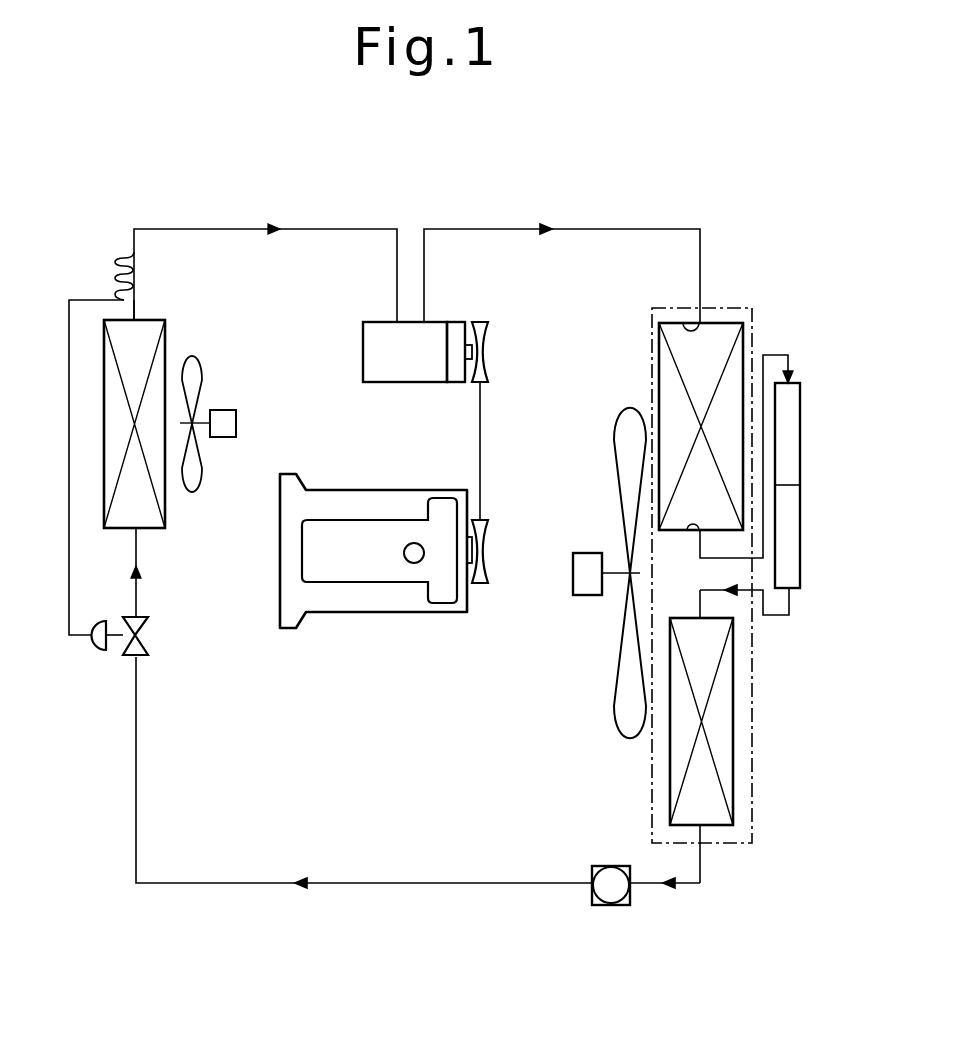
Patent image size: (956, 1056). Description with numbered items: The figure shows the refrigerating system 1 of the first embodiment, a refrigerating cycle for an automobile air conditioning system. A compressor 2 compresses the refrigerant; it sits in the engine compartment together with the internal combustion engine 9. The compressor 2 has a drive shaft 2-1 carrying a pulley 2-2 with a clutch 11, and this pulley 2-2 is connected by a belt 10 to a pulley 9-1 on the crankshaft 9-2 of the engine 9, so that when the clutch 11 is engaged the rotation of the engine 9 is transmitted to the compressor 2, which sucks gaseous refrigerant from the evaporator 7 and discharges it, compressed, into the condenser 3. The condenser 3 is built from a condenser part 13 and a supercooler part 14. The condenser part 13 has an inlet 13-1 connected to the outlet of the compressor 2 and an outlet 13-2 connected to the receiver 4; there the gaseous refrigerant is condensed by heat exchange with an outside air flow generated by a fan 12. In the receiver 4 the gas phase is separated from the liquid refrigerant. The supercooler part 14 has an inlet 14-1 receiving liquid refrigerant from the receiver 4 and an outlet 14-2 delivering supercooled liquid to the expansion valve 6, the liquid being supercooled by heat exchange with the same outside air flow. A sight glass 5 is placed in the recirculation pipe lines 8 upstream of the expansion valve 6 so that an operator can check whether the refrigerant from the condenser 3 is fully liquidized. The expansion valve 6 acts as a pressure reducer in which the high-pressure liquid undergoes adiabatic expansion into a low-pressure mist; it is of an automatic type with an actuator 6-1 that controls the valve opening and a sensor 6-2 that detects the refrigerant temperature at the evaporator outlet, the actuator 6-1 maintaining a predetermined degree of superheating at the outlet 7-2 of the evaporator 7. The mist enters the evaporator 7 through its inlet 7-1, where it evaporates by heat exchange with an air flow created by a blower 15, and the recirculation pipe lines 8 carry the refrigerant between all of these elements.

The refrigerating apparatus 1 is at (168, 190).
The compressor 2 is at (412, 384).
The drive shaft 2-1 is at (464, 378).
The pulley 2-2 is at (490, 360).
The condenser 3 is at (746, 306).
The receiver 4 is at (802, 446).
The sight glass 5 is at (592, 868).
The expansion valve 6 is at (149, 640).
The actuator 6-1 is at (96, 652).
The sensor 6-2 is at (118, 276).
The evaporator 7 is at (166, 348).
The inlet 7-1 is at (137, 530).
The outlet 7-2 is at (134, 320).
The recirculation pipe lines 8 is at (354, 228).
The internal combustion engine 9 is at (378, 610).
The pulley 9-1 is at (490, 547).
The engine output shaft 9-2 is at (472, 560).
The belt 10 is at (484, 440).
The clutch 11 is at (457, 330).
The fan 12 is at (587, 596).
The condenser part 13 is at (664, 356).
The inlet 13-1 is at (682, 325).
The outlet 13-2 is at (692, 534).
The supercooler part 14 is at (672, 778).
The inlet 14-1 is at (728, 628).
The outlet 14-2 is at (704, 830).
The blower 15 is at (237, 420).